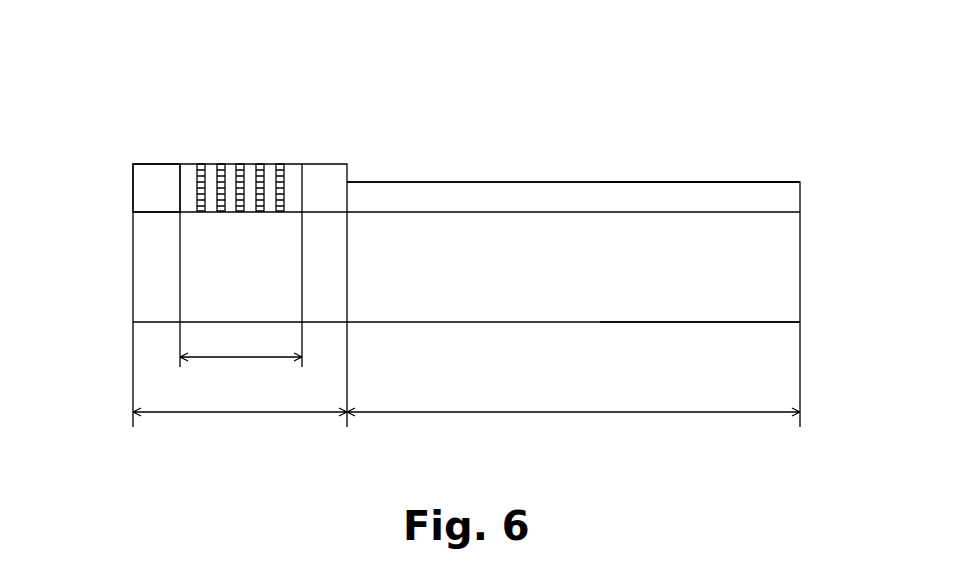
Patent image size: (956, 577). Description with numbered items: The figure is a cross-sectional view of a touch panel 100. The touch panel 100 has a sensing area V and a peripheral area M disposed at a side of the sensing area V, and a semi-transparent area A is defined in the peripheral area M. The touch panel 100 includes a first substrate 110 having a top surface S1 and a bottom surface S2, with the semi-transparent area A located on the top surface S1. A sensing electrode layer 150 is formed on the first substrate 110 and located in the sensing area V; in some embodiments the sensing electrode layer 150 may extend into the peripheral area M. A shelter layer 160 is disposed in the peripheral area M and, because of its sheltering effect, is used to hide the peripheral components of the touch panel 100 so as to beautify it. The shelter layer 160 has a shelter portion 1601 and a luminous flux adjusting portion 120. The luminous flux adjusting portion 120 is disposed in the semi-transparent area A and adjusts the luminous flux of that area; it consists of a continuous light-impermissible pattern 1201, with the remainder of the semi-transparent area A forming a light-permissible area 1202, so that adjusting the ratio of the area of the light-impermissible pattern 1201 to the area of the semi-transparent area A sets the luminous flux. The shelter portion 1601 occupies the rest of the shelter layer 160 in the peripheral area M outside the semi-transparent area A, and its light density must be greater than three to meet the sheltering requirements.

The touch panel 100 is at (745, 120).
The first substrate 110 is at (143, 270).
The luminous flux adjusting portion 120 is at (294, 126).
The light-impermissible pattern 1201 is at (280, 173).
The light-permissible area 1202 is at (230, 203).
The sensing electrode layer 150 is at (575, 195).
The shelter layer 160 is at (265, 83).
The shelter portion 1601 is at (152, 188).
The top surface S1 is at (750, 212).
The bottom surface S2 is at (745, 322).
The semi-transparent area A is at (241, 342).
The peripheral area M is at (240, 396).
The sensing area V is at (573, 397).